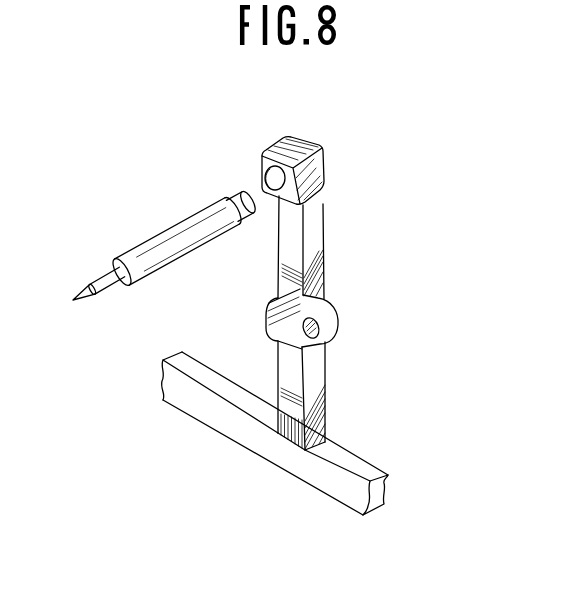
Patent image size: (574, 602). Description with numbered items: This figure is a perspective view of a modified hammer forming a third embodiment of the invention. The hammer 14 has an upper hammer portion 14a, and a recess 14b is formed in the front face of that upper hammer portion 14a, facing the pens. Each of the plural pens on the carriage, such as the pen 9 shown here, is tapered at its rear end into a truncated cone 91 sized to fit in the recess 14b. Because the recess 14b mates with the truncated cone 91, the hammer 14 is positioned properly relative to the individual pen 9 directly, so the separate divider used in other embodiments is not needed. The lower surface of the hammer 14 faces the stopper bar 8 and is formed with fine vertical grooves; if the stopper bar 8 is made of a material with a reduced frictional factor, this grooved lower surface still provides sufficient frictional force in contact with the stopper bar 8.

The stopper bar 8 is at (182, 402).
The pen 9 is at (155, 233).
The truncated cone 91 is at (233, 190).
The hammer 14 is at (324, 258).
The upper hammer portion 14a is at (318, 180).
The recess 14b is at (278, 178).